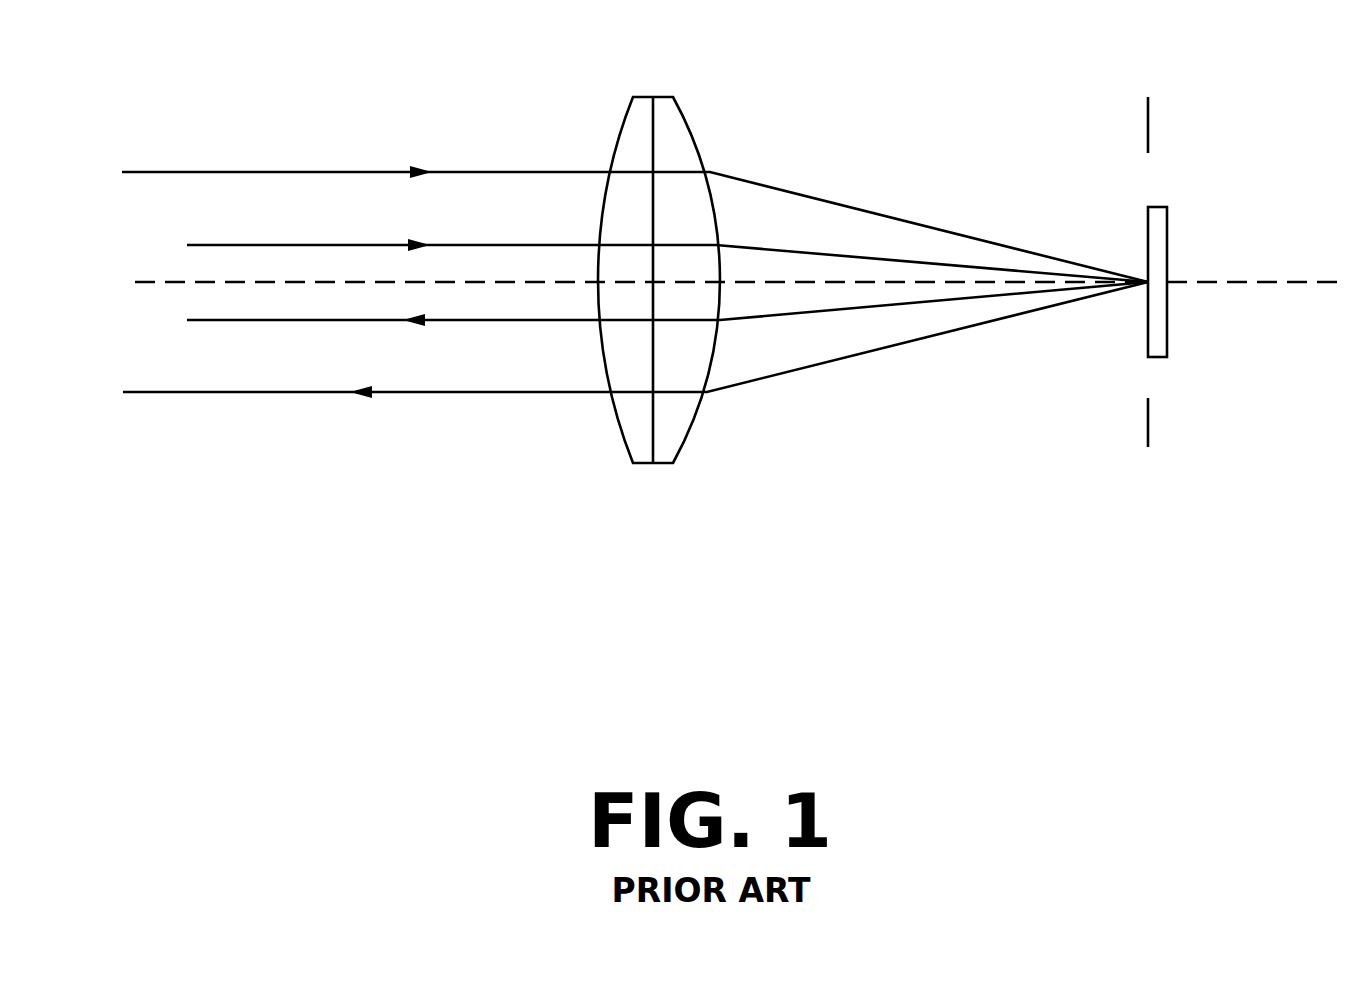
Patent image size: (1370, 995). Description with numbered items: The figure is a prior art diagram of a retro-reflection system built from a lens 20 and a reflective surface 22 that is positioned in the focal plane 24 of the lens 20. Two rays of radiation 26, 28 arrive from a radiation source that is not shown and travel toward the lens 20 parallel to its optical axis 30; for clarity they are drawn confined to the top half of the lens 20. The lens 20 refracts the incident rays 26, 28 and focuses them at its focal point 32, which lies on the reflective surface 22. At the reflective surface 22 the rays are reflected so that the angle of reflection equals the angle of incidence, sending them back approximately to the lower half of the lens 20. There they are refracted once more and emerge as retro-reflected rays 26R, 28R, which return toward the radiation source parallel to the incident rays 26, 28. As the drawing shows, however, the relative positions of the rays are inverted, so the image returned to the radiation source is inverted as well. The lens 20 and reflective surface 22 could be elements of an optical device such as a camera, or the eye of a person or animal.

The lens 20 is at (693, 124).
The reflective surface 22 is at (1167, 240).
The focal plane 24 is at (1152, 113).
The ray of radiation 26 is at (250, 168).
The retro-reflected ray 26R is at (165, 397).
The ray of radiation 28 is at (248, 240).
The retro-reflected ray 28R is at (248, 325).
The optical axis 30 is at (1258, 279).
The focal point 32 is at (1140, 289).